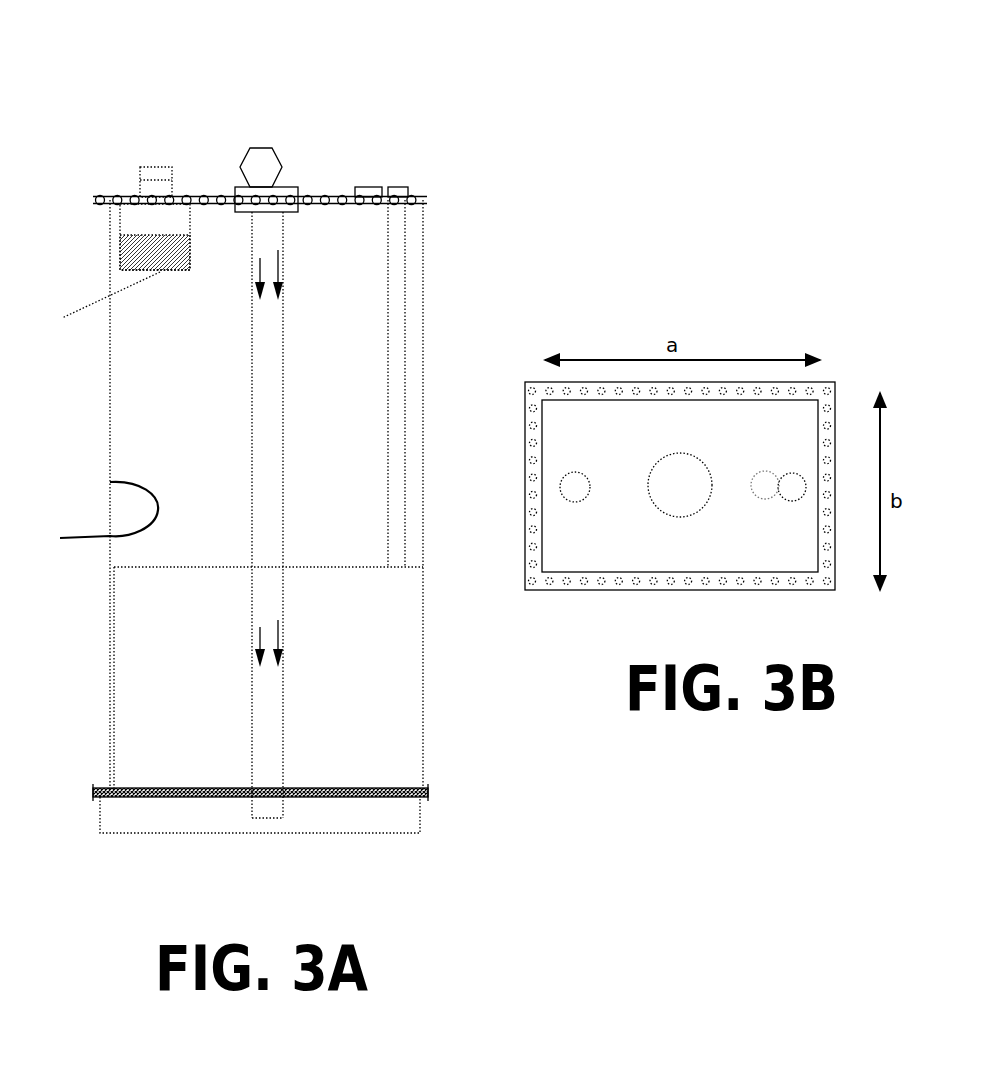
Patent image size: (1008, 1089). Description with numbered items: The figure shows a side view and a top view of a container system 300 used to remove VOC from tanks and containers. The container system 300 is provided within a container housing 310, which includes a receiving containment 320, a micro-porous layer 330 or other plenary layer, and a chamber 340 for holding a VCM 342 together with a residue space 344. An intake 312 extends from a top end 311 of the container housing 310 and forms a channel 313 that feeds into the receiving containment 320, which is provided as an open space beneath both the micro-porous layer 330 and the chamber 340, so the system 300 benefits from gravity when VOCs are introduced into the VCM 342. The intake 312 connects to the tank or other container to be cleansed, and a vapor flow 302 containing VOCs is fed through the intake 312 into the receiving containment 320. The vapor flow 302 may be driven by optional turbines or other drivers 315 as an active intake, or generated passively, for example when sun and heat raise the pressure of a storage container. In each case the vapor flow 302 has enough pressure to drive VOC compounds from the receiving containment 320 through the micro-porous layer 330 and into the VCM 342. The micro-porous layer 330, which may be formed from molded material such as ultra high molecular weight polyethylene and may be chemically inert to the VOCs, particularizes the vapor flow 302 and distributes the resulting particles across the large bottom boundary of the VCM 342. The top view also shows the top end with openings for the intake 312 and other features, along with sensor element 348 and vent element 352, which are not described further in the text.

In FIG. 3A, the container system 300 is at (397, 100).
In FIG. 3A, the vapor flow 302 is at (283, 268).
In FIG. 3A, the container housing 310 is at (102, 442).
In FIG. 3A, the top end 311 is at (340, 195).
In FIG. 3A, the intake 312 is at (297, 187).
In FIG. 3B, the intake 312 is at (678, 454).
In FIG. 3A, the channel 313 is at (260, 407).
In FIG. 3A, the drivers 315 is at (251, 147).
In FIG. 3A, the receiving containment 320 is at (400, 826).
In FIG. 3A, the micro-porous layer 330 is at (316, 787).
In FIG. 3A, the chamber 340 is at (172, 546).
In FIG. 3A, the VCM 342 is at (165, 745).
In FIG. 3A, the residue space 344 is at (88, 515).
In FIG. 3A, the level sensor 348 is at (144, 148).
In FIG. 3B, the level sensor 348 is at (577, 476).
In FIG. 3A, the vent tube 352 is at (393, 385).
In FIG. 3B, the vent tube 352 is at (791, 500).